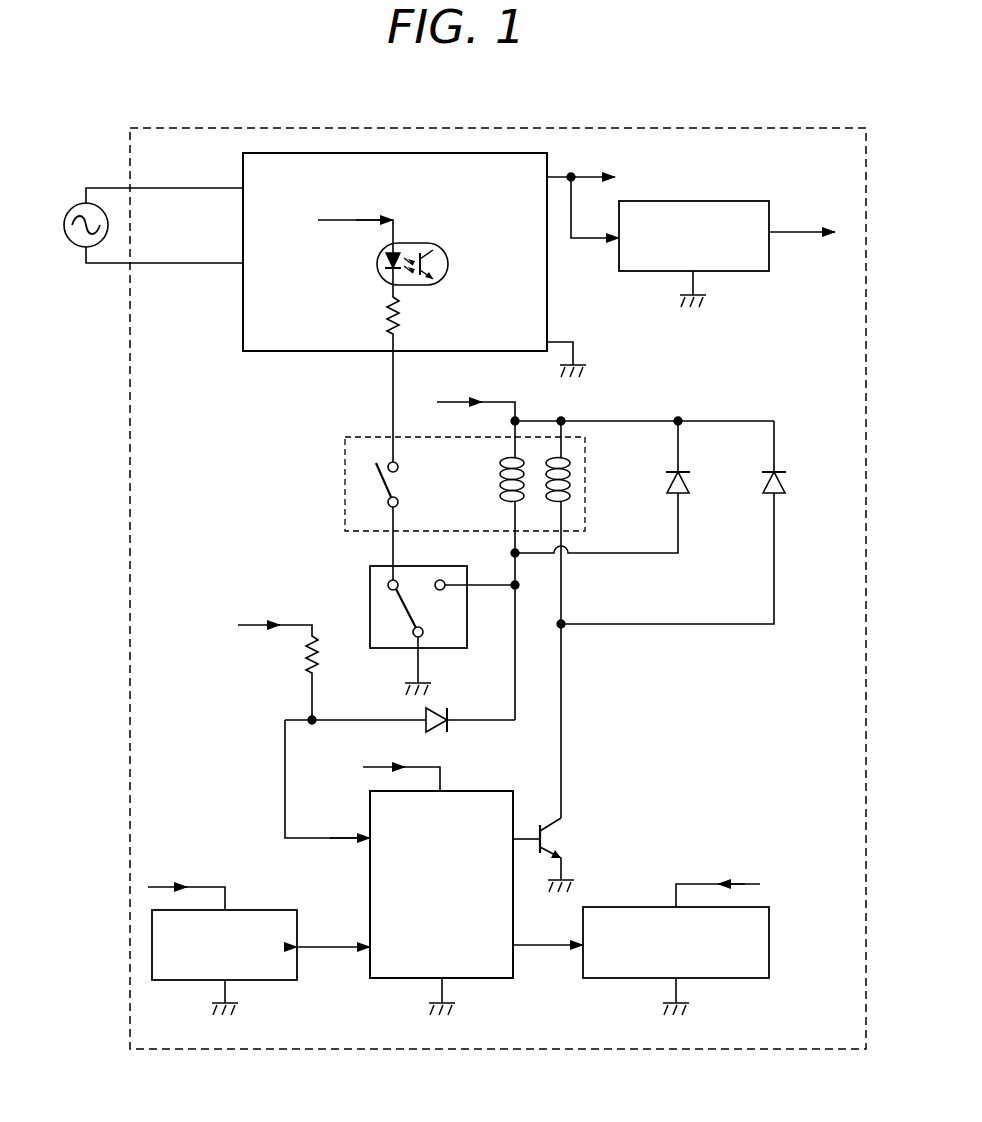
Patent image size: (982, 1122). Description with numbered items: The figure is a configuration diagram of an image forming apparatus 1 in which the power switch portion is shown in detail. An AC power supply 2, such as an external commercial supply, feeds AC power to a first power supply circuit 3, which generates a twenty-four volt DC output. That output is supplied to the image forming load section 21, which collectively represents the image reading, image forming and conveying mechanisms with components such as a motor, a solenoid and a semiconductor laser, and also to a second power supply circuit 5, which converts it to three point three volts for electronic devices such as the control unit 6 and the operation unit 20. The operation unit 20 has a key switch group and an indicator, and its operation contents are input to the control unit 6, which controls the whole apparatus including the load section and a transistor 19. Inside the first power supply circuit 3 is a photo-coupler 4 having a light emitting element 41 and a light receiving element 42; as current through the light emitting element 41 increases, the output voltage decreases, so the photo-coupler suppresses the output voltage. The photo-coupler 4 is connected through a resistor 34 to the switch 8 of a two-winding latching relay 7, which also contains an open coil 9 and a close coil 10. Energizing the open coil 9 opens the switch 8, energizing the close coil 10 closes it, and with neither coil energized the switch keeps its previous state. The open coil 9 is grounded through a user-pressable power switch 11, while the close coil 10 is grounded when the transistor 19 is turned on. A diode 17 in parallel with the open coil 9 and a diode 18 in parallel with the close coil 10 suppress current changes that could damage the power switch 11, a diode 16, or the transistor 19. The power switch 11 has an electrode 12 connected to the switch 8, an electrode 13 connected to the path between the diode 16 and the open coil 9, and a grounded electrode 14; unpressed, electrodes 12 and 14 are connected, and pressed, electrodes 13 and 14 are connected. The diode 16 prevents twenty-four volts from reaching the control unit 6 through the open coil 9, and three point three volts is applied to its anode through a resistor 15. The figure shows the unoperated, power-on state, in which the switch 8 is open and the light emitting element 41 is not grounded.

The image forming apparatus 1 is at (722, 127).
The AC power supply 2 is at (70, 208).
The first power supply circuit 3 is at (418, 153).
The photo-coupler 4 is at (420, 243).
The light emitting element 41 is at (380, 262).
The light receiving element 42 is at (443, 268).
The resistor 34 is at (386, 313).
The second power supply circuit 5 is at (703, 201).
The control unit 6 is at (480, 791).
The two-winding latching relay 7 is at (352, 437).
The switch 8 is at (378, 481).
The open coil 9 is at (499, 487).
The close coil 10 is at (572, 481).
The power switch 11 is at (370, 627).
The electrode 12 is at (386, 581).
The electrode 13 is at (450, 584).
The electrode 14 is at (425, 633).
The resistor 15 is at (306, 665).
The diode 16 is at (455, 718).
The diode 17 is at (672, 497).
The diode 18 is at (770, 497).
The transistor 19 is at (557, 817).
The operation unit 20 is at (263, 910).
The image forming load section 21 is at (770, 938).